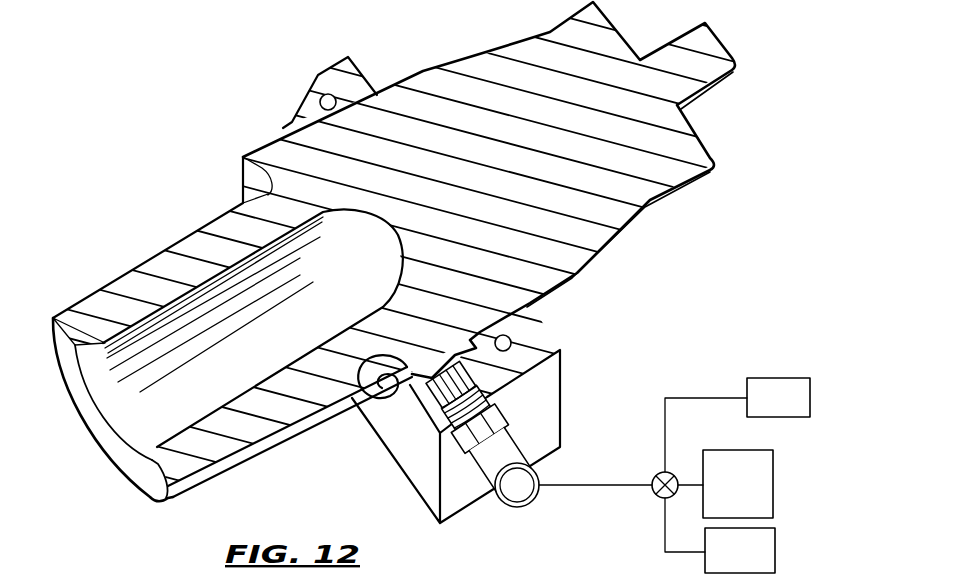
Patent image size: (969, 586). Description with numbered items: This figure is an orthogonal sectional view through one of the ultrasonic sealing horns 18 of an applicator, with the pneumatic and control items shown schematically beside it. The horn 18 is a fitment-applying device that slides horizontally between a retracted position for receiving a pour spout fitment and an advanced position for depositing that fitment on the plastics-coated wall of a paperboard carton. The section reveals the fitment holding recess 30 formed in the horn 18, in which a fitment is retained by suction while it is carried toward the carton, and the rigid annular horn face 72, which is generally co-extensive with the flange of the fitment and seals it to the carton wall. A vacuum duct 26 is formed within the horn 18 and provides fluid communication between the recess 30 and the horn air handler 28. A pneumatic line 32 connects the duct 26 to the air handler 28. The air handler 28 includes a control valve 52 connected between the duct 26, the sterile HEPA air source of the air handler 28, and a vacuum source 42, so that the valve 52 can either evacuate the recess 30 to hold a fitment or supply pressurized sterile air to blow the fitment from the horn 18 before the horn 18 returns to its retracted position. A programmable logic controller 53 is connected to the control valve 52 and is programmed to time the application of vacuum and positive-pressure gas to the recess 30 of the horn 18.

The ultrasonic sealing horn 18 is at (145, 283).
The vacuum duct 26 is at (478, 347).
The fitment holding recess 30 is at (128, 437).
The annular horn face 72 is at (160, 485).
The pneumatic line 32 is at (578, 488).
The control valve 52 is at (657, 497).
The programmable logic controller 53 is at (793, 400).
The horn air handler 28 is at (757, 492).
The vacuum source 42 is at (760, 552).